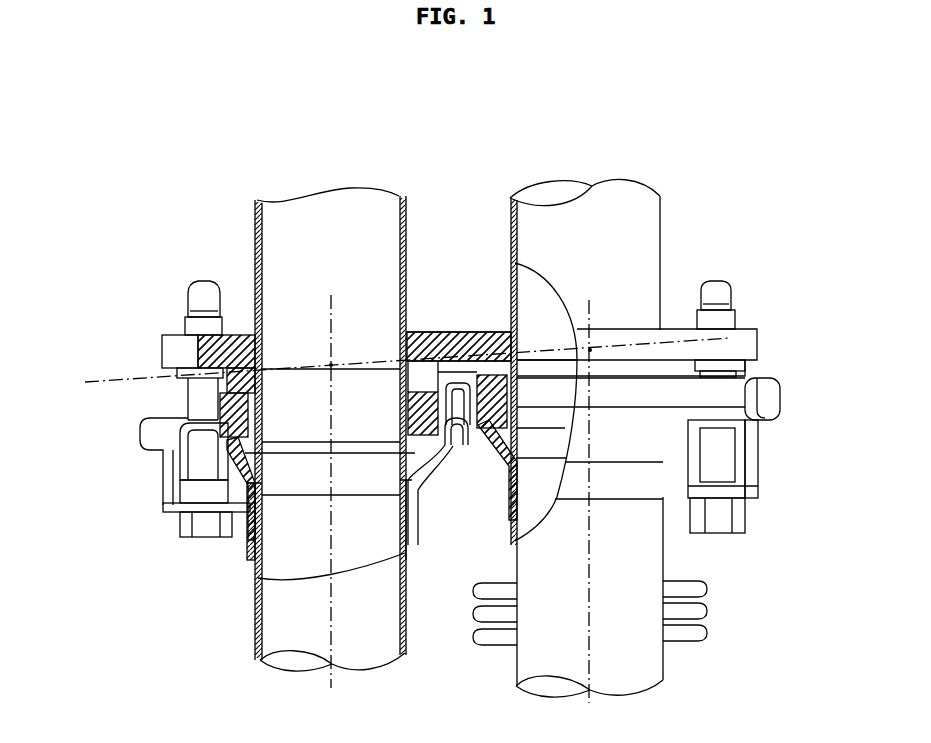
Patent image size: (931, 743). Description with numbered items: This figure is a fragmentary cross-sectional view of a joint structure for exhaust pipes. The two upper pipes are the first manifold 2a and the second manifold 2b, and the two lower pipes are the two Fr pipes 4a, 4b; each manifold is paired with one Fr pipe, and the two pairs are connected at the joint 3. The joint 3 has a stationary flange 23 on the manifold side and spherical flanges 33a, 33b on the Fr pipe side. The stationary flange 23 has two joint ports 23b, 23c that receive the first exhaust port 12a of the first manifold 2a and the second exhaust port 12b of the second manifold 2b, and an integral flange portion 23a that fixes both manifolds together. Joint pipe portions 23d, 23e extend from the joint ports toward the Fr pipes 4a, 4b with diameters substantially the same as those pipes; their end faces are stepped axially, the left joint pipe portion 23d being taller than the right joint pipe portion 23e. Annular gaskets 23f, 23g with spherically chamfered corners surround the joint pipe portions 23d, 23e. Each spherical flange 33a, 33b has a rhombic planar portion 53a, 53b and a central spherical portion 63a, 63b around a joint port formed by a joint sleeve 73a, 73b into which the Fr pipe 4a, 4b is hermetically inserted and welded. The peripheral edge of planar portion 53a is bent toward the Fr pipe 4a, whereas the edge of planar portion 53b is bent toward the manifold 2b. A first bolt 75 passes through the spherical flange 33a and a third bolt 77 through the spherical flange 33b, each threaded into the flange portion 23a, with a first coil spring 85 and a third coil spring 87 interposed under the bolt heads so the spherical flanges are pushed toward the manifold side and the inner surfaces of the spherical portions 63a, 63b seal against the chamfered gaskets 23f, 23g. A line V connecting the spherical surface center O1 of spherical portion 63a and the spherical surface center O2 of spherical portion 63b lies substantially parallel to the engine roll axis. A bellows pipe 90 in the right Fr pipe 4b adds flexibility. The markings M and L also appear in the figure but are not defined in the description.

The first manifold 2a is at (343, 207).
The second manifold 2b is at (598, 198).
The joint 3 is at (158, 342).
The Fr pipe 4a is at (270, 640).
The Fr pipe 4b is at (666, 681).
The first exhaust port 12a is at (347, 362).
The second exhaust port 12b is at (538, 360).
The stationary flange 23 is at (747, 344).
The integral flange portion 23a is at (452, 332).
The joint port 23b is at (247, 337).
The joint port 23c is at (511, 328).
The joint pipe portion 23d is at (218, 410).
The joint pipe portion 23e is at (488, 452).
The annular gasket 23f is at (166, 460).
The annular gasket 23g is at (478, 455).
The spherical flange 33a is at (249, 535).
The spherical flange 33b is at (657, 482).
The planar portion 53a is at (148, 418).
The planar portion 53b is at (785, 403).
The spherical portion 63a is at (222, 466).
The spherical portion 63b is at (682, 437).
The joint sleeve 73a is at (233, 517).
The joint sleeve 73b is at (740, 484).
The first bolt 75 is at (195, 311).
The third bolt 77 is at (718, 296).
The first coil spring 85 is at (164, 484).
The third coil spring 87 is at (752, 460).
The bellows pipe 90 is at (708, 610).
The line V is at (107, 364).
The spherical surface center O1 is at (331, 363).
The spherical surface center O2 is at (590, 350).
The gap M is at (421, 367).
The length L is at (488, 367).